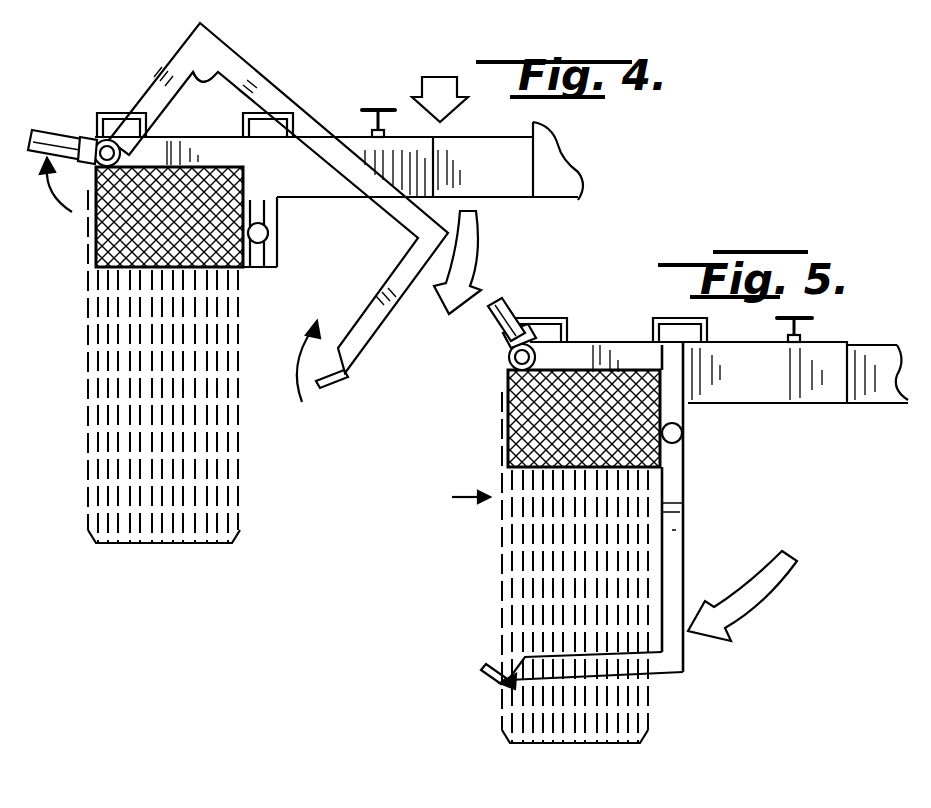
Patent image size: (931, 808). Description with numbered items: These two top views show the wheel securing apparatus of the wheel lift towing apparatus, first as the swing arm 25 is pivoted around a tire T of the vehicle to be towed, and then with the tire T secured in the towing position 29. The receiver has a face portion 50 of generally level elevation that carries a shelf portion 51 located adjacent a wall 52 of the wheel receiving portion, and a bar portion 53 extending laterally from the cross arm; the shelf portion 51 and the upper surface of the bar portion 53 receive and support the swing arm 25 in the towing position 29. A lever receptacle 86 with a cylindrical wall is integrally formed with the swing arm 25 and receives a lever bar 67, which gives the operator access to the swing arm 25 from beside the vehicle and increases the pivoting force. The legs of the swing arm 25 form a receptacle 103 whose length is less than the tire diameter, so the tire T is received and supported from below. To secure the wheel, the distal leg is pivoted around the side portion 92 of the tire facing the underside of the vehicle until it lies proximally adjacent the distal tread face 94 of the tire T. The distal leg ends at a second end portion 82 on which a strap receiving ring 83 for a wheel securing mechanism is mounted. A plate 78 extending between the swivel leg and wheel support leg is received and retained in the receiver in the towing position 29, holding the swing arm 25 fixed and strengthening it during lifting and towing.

In FIG. 4, the swing arm 25 is at (297, 95).
In FIG. 5, the swing arm 25 is at (702, 532).
In FIG. 5, the towing position 29 is at (815, 558).
In FIG. 4, the face portion 50 is at (318, 185).
In FIG. 5, the face portion 50 is at (835, 395).
In FIG. 5, the shelf portion 51 is at (574, 340).
In FIG. 5, the wall 52 is at (637, 370).
In FIG. 4, the bar portion 53 is at (273, 258).
In FIG. 5, the bar portion 53 is at (685, 440).
In FIG. 4, the lever bar 67 is at (54, 135).
In FIG. 5, the lever bar 67 is at (503, 304).
In FIG. 4, the plate 78 is at (203, 62).
In FIG. 5, the second end portion 82 is at (504, 684).
In FIG. 5, the strap receiving ring 83 is at (498, 668).
In FIG. 4, the lever receptacle 86 is at (84, 138).
In FIG. 5, the lever receptacle 86 is at (508, 355).
In FIG. 4, the side portion 92 is at (170, 366).
In FIG. 5, the side portion 92 is at (583, 567).
In FIG. 4, the distal tread face 94 is at (155, 544).
In FIG. 5, the distal tread face 94 is at (588, 745).
In FIG. 4, the receptacle 103 is at (326, 373).
In FIG. 5, the receptacle 103 is at (446, 499).
In FIG. 4, the tire T is at (115, 399).
In FIG. 5, the tire T is at (520, 568).